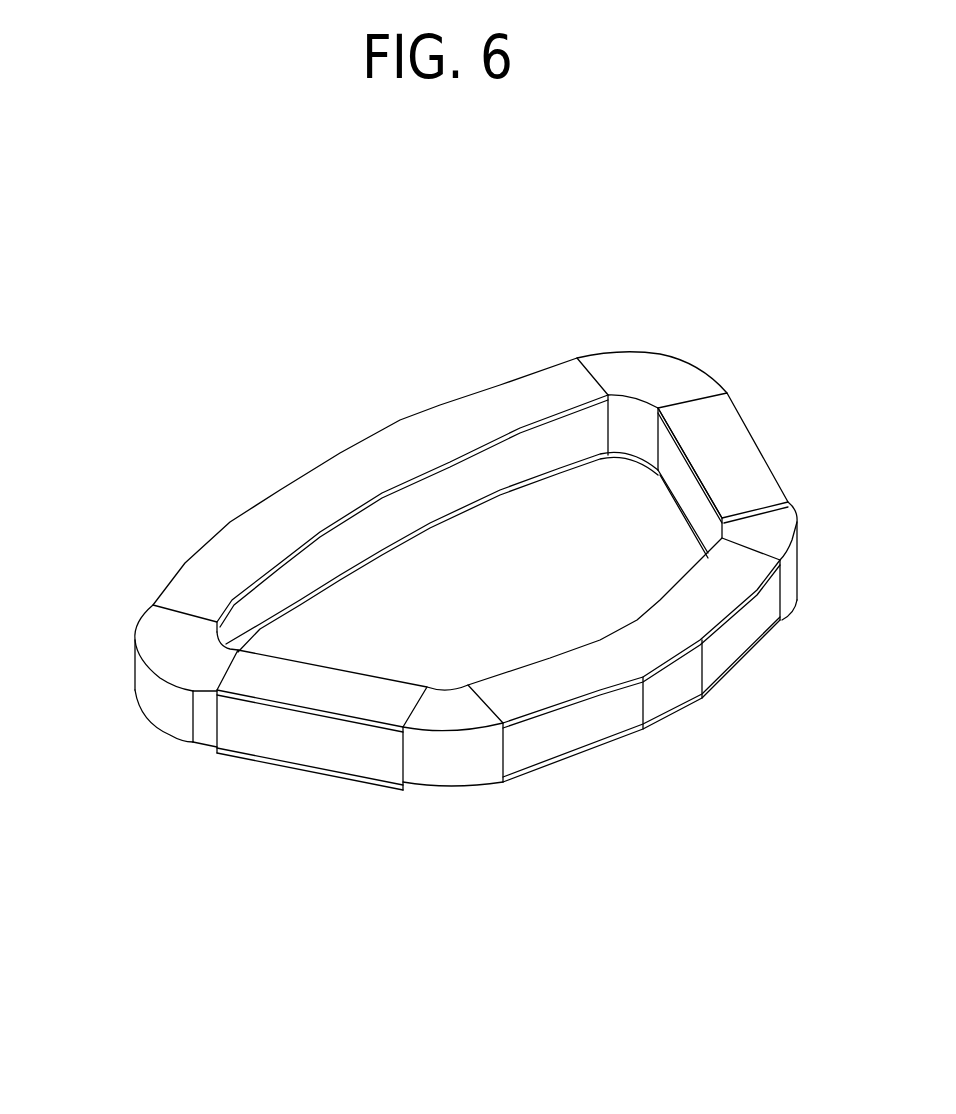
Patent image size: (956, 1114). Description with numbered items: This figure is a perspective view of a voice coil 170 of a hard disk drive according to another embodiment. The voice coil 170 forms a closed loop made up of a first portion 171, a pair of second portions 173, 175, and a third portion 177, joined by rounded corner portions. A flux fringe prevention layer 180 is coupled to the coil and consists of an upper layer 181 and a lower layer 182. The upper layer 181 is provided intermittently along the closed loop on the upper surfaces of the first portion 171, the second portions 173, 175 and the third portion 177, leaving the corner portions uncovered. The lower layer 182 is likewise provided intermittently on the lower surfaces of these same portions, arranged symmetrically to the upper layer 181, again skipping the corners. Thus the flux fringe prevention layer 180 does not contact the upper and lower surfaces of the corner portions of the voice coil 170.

The voice coil 170 is at (118, 318).
The first portion 171 is at (753, 627).
The second portion 173 is at (218, 724).
The second portion 175 is at (682, 487).
The third portion 177 is at (382, 530).
The flux fringe prevention layer 180 is at (504, 621).
The upper layer 181 is at (440, 410).
The lower layer 182 is at (477, 503).